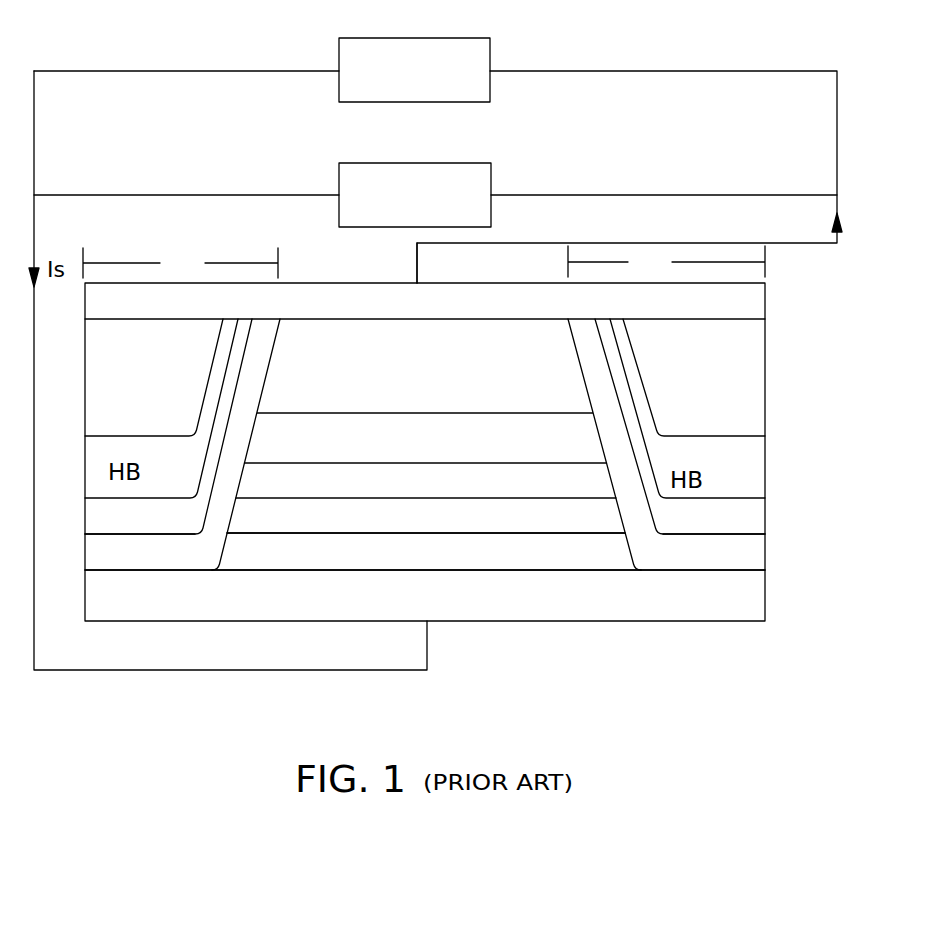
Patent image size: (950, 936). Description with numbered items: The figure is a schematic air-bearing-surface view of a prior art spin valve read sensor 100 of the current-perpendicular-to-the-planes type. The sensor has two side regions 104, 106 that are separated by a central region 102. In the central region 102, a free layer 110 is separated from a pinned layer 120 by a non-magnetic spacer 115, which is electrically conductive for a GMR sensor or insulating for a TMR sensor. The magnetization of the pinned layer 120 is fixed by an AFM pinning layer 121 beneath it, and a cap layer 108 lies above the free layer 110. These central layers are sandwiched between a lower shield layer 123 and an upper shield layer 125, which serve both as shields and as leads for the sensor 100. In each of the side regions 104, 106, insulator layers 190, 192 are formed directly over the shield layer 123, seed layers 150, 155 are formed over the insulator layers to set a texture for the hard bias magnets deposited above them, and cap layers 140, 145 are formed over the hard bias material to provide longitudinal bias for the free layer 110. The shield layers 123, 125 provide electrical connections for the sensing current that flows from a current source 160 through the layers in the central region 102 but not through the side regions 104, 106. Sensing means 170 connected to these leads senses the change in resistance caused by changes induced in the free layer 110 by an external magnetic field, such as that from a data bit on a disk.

The SV sensor 100 is at (688, 621).
The central region 102 is at (388, 262).
The side region 104 is at (180, 263).
The side region 106 is at (666, 261).
The cap layer 108 is at (515, 408).
The free layer 110 is at (515, 458).
The spacer 115 is at (543, 493).
The pinned layer 120 is at (543, 528).
The AFM pinning layer 121 is at (515, 563).
The shield layer 123 is at (545, 614).
The shield layer 125 is at (540, 314).
The cap layer 140 is at (119, 383).
The cap layer 145 is at (668, 381).
The seed layer 150 is at (92, 520).
The seed layer 155 is at (758, 515).
The current source 160 is at (491, 178).
The sensing means 170 is at (490, 53).
The insulator layer 190 is at (142, 567).
The insulator layer 192 is at (762, 553).